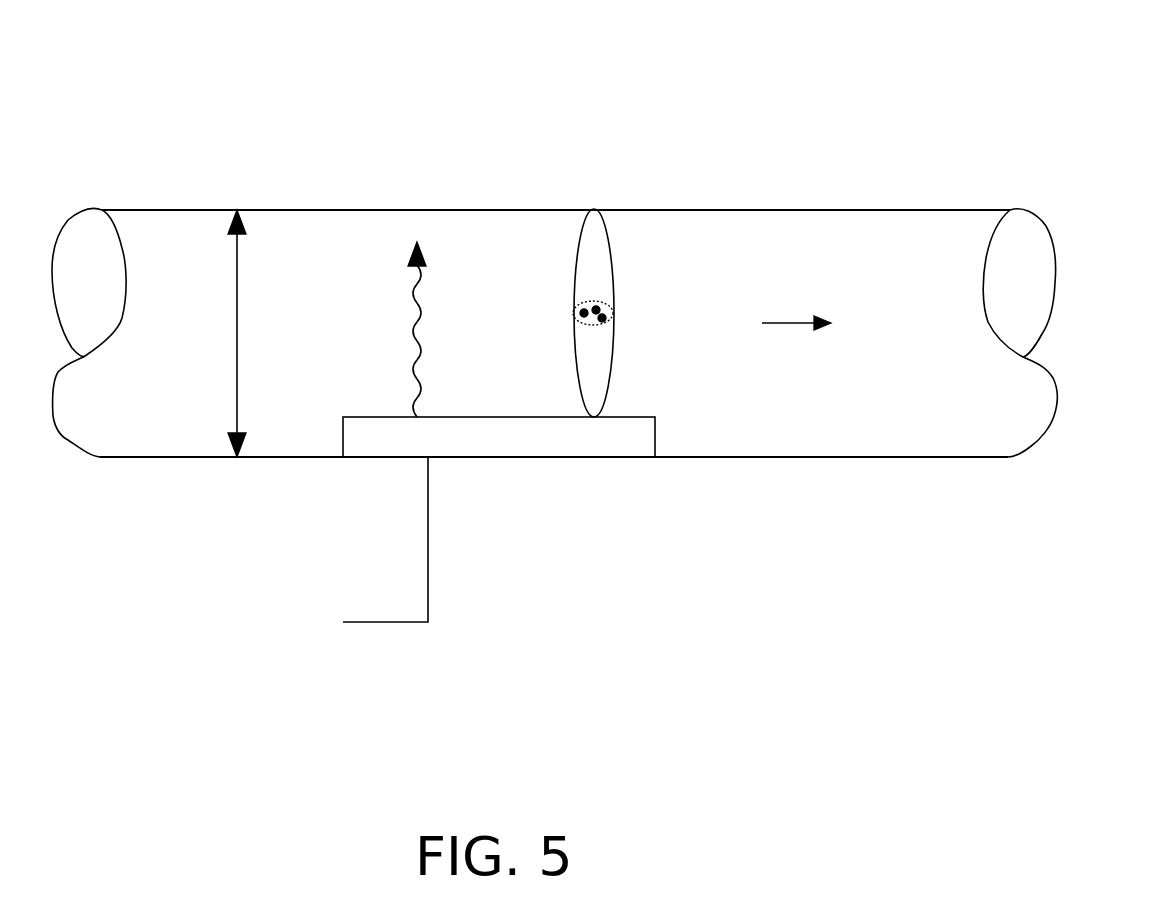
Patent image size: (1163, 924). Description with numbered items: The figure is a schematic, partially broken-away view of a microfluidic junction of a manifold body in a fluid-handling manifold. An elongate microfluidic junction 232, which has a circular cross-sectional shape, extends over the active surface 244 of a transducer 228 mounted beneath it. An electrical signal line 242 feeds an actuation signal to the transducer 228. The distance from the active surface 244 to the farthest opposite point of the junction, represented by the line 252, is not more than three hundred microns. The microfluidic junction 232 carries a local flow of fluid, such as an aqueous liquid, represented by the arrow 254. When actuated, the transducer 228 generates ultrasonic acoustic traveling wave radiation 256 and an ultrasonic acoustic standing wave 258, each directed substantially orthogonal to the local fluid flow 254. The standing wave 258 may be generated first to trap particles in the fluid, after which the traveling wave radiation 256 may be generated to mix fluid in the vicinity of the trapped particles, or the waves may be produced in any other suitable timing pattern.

The elongate microfluidic junction 232 is at (492, 295).
The line representing distance from active surface to farthest opposite point 252 is at (237, 318).
The arrow representing local fluid flow 254 is at (790, 320).
The transducer 228 is at (479, 445).
The electrical signal line 242 is at (357, 622).
The active surface 244 is at (385, 417).
The ultrasonic acoustic traveling wave radiation 256 is at (413, 318).
The ultrasonic acoustic standing wave 258 is at (575, 297).